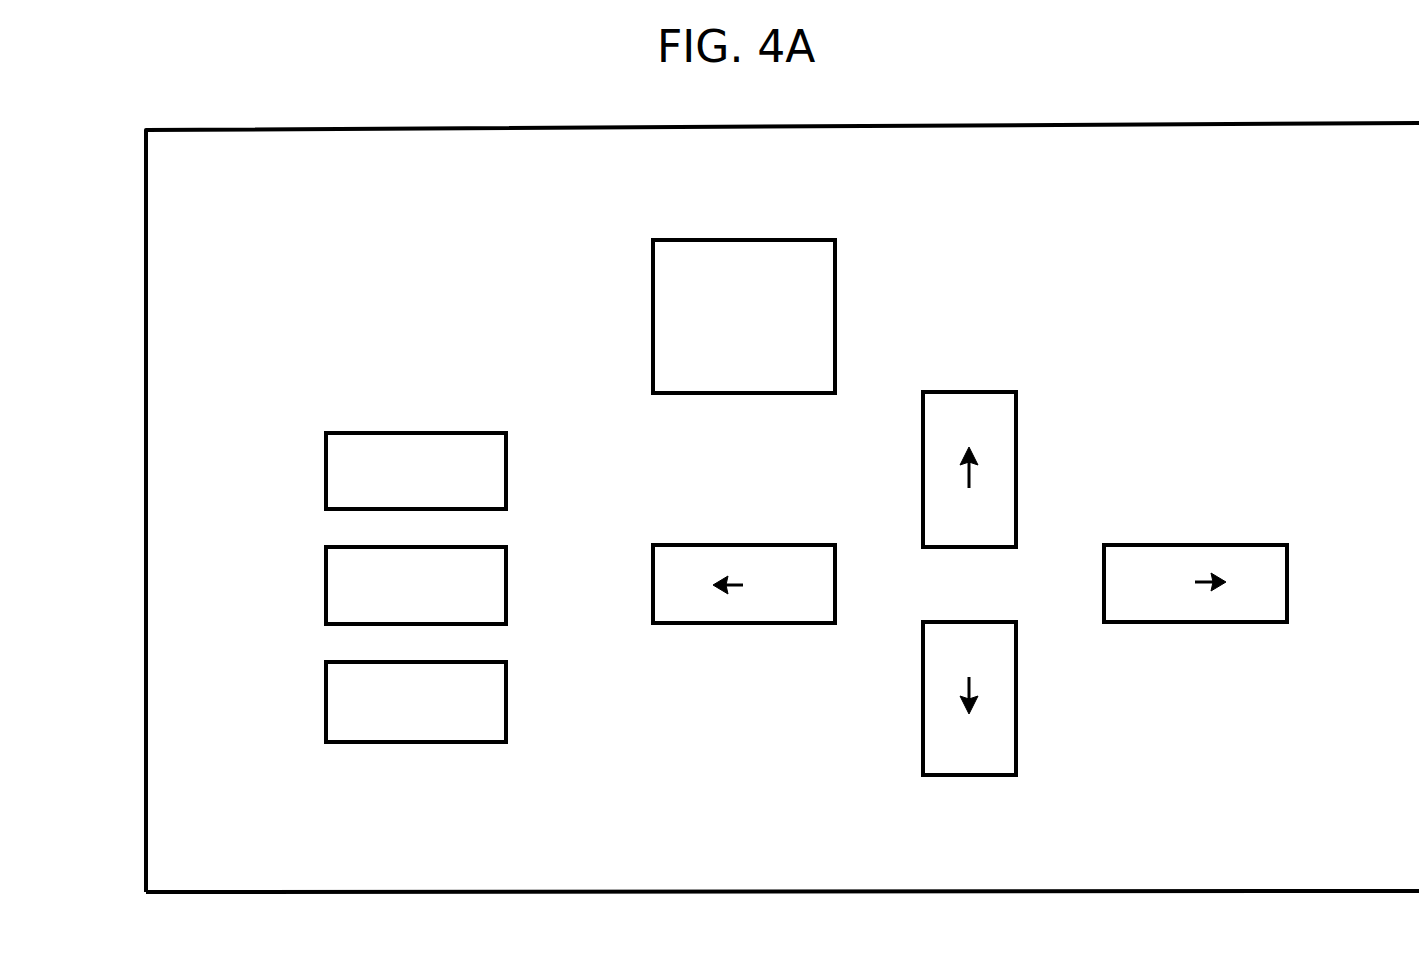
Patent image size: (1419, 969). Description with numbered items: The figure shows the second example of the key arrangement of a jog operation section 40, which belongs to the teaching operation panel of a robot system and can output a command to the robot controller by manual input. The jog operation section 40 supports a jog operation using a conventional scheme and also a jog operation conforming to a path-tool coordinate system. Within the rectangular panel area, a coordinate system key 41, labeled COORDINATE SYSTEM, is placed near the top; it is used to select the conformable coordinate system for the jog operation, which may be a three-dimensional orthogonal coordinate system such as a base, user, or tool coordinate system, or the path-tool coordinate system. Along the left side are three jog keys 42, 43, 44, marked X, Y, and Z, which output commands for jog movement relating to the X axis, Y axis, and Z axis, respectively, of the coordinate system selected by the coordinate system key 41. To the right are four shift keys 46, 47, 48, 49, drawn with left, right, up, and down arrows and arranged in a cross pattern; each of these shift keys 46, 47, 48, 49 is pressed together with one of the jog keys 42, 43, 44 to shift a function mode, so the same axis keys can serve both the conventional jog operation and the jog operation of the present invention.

The jog operation section 40 is at (508, 114).
The coordinate system key 41 is at (748, 240).
The jog key 42 is at (326, 475).
The jog key 43 is at (326, 590).
The jog key 44 is at (326, 706).
The shift key 46 is at (653, 590).
The shift key 47 is at (1287, 582).
The shift key 48 is at (957, 392).
The shift key 49 is at (960, 776).